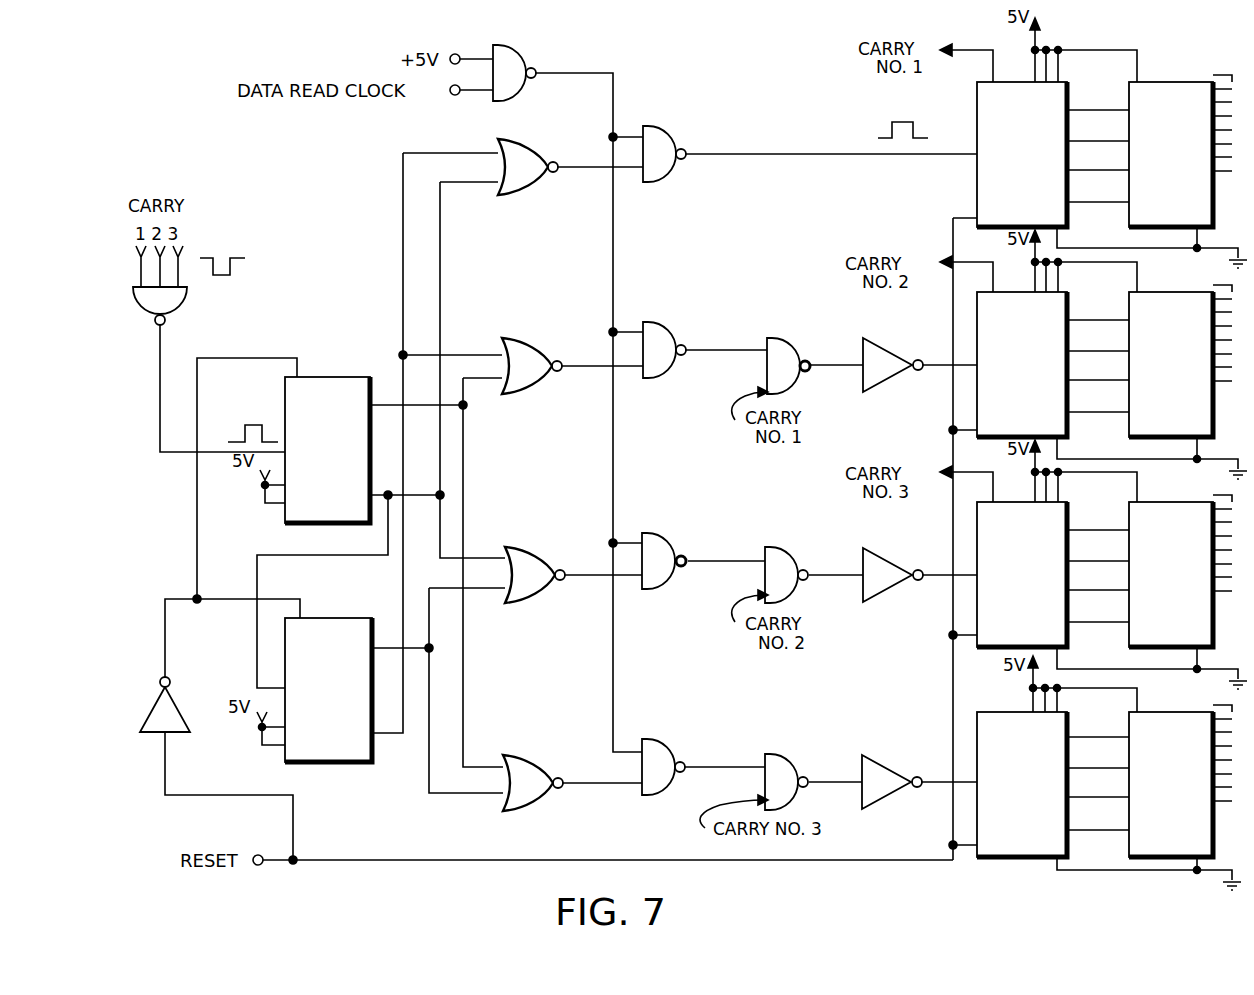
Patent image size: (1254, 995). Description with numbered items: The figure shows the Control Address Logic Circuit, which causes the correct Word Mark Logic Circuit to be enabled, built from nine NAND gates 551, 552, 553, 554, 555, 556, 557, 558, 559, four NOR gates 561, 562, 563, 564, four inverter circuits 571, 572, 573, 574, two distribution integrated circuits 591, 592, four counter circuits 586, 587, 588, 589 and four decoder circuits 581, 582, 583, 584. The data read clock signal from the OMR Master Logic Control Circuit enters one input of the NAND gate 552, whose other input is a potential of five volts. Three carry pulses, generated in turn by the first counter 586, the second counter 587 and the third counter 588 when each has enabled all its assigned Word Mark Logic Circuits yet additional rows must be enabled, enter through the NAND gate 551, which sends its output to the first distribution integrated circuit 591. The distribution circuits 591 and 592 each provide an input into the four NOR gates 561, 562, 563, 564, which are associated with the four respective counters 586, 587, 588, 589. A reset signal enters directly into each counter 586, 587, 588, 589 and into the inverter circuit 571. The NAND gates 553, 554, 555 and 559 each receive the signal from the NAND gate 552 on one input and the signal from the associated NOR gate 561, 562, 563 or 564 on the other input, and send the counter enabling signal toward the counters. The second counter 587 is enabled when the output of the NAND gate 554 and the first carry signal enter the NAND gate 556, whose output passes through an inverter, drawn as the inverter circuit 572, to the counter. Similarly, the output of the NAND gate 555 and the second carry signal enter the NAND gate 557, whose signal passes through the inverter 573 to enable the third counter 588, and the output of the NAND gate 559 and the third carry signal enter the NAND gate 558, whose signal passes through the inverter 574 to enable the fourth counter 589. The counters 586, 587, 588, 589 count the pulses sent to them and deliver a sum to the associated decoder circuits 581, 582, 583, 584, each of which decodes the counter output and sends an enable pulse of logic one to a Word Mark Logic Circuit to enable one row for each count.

The NAND gate 551 is at (133, 300).
The NAND gate 552 is at (513, 46).
The NAND gate 553 is at (670, 130).
The NAND gate 554 is at (665, 330).
The NAND gate 555 is at (675, 545).
The NAND gate 556 is at (778, 340).
The NAND gate 557 is at (788, 556).
The NAND gate 558 is at (788, 757).
The NAND gate 559 is at (670, 748).
The NOR gate 561 is at (533, 188).
The NOR gate 562 is at (529, 345).
The NOR gate 563 is at (532, 554).
The NOR gate 564 is at (530, 763).
The inverter circuit 571 is at (148, 708).
The inverter circuit 572 is at (880, 385).
The inverter circuit 573 is at (882, 593).
The inverter circuit 574 is at (882, 798).
The decoder circuit 581 is at (1168, 82).
The decoder circuit 582 is at (1168, 292).
The decoder circuit 583 is at (1172, 502).
The decoder circuit 584 is at (1172, 712).
The counter circuit 586 is at (977, 192).
The counter circuit 587 is at (977, 336).
The counter circuit 588 is at (977, 541).
The counter circuit 589 is at (977, 743).
The distribution integrated circuit 591 is at (322, 377).
The distribution integrated circuit 592 is at (338, 618).